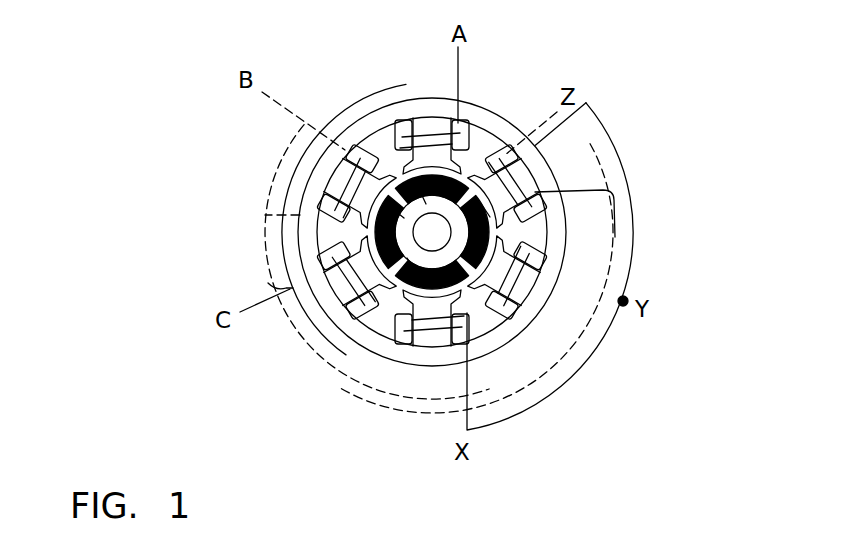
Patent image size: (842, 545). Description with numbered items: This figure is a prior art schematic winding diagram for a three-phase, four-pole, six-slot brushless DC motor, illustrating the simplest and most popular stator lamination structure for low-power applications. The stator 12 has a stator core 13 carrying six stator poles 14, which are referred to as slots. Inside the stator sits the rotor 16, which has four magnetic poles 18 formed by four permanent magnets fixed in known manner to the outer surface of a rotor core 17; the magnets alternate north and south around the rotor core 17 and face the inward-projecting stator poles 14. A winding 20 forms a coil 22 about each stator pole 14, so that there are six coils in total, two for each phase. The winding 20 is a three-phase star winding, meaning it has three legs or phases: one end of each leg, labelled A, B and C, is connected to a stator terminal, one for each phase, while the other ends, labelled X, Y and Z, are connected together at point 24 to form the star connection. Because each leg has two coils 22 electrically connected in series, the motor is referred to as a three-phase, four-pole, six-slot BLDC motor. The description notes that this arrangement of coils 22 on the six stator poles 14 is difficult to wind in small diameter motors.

The stator 12 is at (510, 105).
The stator core 13 is at (484, 117).
The stator pole 14 is at (430, 125).
The rotor 16 is at (407, 292).
The rotor core 17 is at (372, 207).
The magnetic pole 18 is at (375, 228).
The winding 20 is at (614, 127).
The coil 22 is at (555, 172).
The star connection point 24 is at (626, 300).